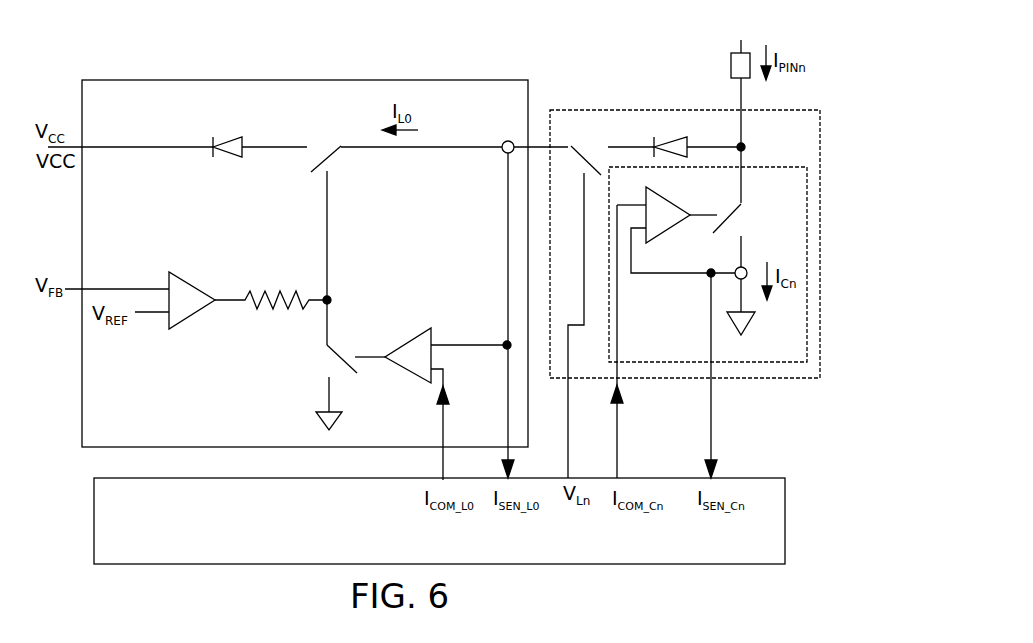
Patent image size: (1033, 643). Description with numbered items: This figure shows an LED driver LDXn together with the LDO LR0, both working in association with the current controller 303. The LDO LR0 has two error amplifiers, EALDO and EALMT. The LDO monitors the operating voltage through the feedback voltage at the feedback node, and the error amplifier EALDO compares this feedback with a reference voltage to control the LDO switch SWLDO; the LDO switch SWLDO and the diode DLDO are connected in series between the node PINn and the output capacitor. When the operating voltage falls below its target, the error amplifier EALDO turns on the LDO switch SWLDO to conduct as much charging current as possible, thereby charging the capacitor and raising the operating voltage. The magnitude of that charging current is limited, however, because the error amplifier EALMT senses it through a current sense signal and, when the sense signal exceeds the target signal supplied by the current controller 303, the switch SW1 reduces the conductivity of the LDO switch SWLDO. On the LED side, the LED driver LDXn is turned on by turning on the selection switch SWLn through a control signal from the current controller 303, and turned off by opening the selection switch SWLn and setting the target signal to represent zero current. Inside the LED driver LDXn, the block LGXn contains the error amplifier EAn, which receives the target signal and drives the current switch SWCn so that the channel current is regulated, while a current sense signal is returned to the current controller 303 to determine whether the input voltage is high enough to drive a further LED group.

The current controller 303 is at (377, 521).
The LDO LR0 is at (140, 111).
The diode DLDO is at (221, 130).
The LDO switch SWLDO is at (318, 138).
The error amplifier EALDO is at (177, 273).
The switch SW1 is at (317, 359).
The error amplifier EALMT is at (421, 383).
The LED driver LDXn is at (800, 378).
The LED group driver LGXn is at (677, 352).
The selection switch SWLn is at (587, 144).
The node PINn is at (715, 63).
The current switch SWCn is at (751, 222).
The error amplifier EAn is at (668, 196).